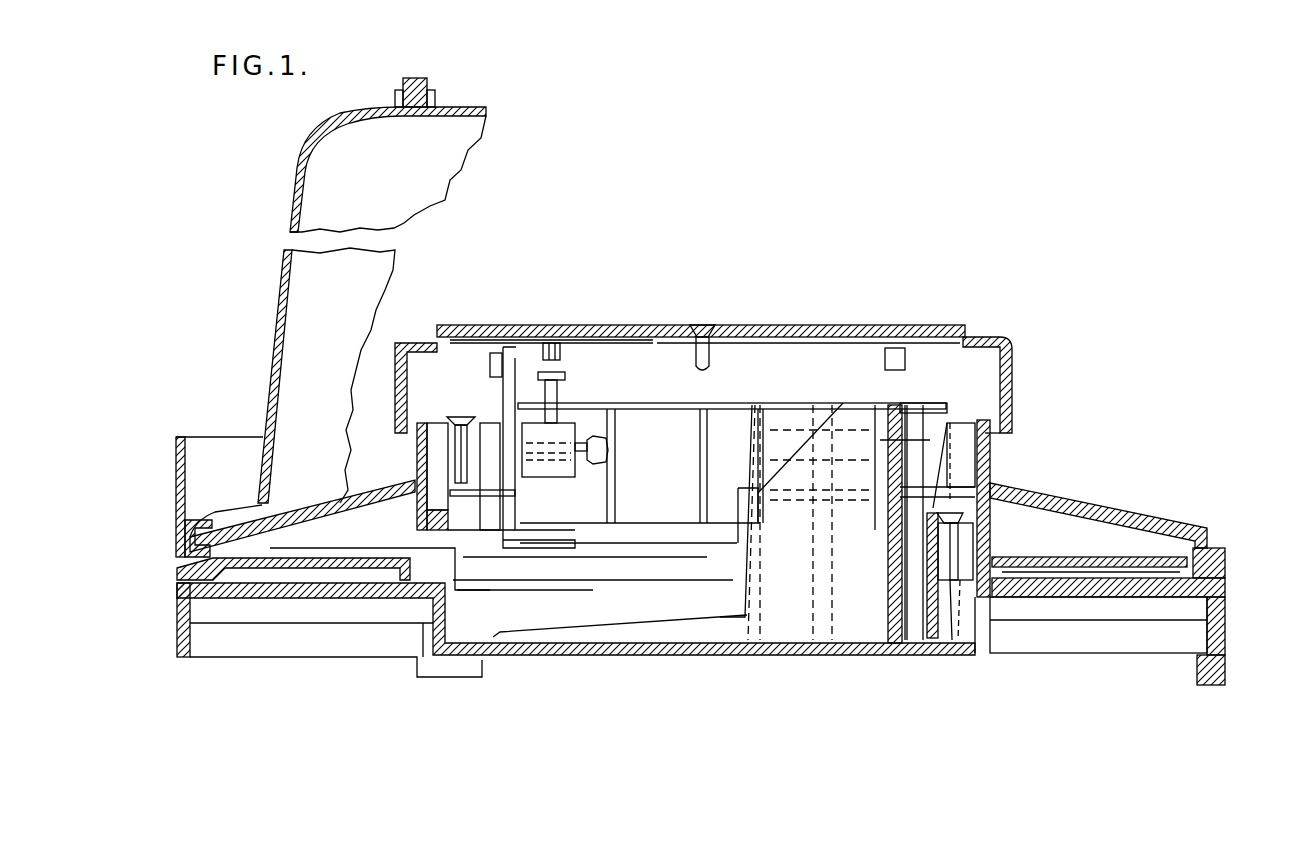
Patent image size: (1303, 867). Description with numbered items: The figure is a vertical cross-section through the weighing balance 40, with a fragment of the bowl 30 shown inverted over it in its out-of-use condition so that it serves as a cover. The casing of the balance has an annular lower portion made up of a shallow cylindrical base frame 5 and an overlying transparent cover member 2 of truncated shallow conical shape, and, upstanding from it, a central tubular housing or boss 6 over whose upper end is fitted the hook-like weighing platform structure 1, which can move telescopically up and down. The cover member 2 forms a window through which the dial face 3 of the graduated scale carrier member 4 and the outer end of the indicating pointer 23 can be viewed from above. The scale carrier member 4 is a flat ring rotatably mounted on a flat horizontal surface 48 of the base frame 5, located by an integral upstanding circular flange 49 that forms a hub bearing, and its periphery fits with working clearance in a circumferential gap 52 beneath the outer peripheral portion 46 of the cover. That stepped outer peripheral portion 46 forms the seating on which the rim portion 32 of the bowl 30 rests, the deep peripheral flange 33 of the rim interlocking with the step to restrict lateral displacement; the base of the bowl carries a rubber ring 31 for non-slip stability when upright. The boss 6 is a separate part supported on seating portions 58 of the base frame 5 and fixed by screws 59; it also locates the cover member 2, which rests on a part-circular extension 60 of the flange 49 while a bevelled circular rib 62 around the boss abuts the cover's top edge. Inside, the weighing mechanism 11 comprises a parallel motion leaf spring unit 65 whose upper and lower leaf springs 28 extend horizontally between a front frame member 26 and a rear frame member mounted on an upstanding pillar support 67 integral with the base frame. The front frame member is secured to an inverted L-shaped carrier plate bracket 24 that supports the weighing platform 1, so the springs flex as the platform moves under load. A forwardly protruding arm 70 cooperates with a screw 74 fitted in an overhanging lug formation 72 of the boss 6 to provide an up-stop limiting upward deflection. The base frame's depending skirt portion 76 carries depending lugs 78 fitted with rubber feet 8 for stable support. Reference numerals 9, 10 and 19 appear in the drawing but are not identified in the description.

The weighing platform structure 1 is at (1010, 386).
The cover member 2 is at (1100, 510).
The dial face 3 is at (1100, 555).
The scale carrier member 4 is at (1222, 576).
The base frame 5 is at (1222, 625).
The tubular housing or boss 6 is at (987, 455).
The rubber feet 8 is at (1220, 675).
The screw 9 is at (696, 330).
The top plate 10 is at (742, 327).
The weighing mechanism 11 is at (632, 380).
The pin 19 is at (585, 446).
The indicating pointer 23 is at (300, 548).
The carrier plate bracket 24 is at (628, 355).
The front frame member 26 is at (520, 505).
The leaf springs 28 is at (740, 402).
The bowl 30 is at (281, 310).
The rubber ring 31 is at (420, 95).
The rim portion 32 is at (220, 500).
The peripheral flange 33 is at (188, 522).
The weighing balance 40 is at (1010, 338).
The outer peripheral portion 46 is at (1175, 520).
The flat horizontal surface 48 is at (1075, 578).
The upstanding circular flange 49 is at (440, 580).
The circumferential gap 52 is at (1225, 565).
The seating portions 58 is at (962, 535).
The screws 59 is at (955, 655).
The part-circular extension 60 is at (990, 500).
The bevelled circular rib 62 is at (414, 483).
The parallel motion leaf spring unit 65 is at (510, 420).
The pillar support 67 is at (850, 610).
The forwardly protruding arm 70 is at (480, 505).
The lug formation 72 is at (450, 475).
The screw 74 is at (457, 450).
The depending skirt portion 76 is at (185, 640).
The depending lugs 78 is at (1215, 665).